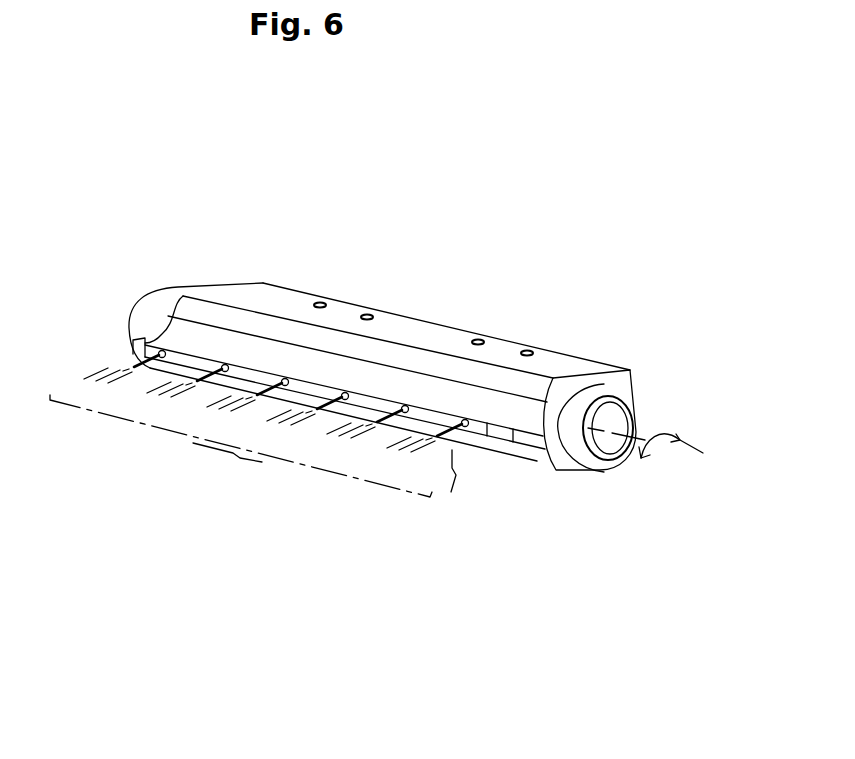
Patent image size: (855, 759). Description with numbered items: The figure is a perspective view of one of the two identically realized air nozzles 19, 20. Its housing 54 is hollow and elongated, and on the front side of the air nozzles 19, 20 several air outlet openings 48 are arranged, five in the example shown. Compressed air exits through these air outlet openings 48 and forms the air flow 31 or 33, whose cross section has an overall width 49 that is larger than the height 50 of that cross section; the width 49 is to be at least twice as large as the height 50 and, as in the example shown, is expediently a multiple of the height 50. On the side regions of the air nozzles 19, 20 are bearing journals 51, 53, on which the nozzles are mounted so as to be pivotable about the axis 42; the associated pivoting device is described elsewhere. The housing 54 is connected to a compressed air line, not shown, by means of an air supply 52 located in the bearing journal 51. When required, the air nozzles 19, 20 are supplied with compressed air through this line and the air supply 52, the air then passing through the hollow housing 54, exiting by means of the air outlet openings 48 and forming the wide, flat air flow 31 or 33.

The air nozzle 19 is at (387, 257).
The air nozzle 20 is at (333, 338).
The air flow 31 is at (340, 299).
The air flow 33 is at (173, 378).
The axis 42 is at (645, 437).
The air outlet openings 48 is at (460, 422).
The overall width 49 is at (193, 443).
The height 50 is at (457, 480).
The bearing journal 51 is at (590, 393).
The air supply 52 is at (608, 447).
The bearing journal 53 is at (156, 300).
The housing 54 is at (563, 363).